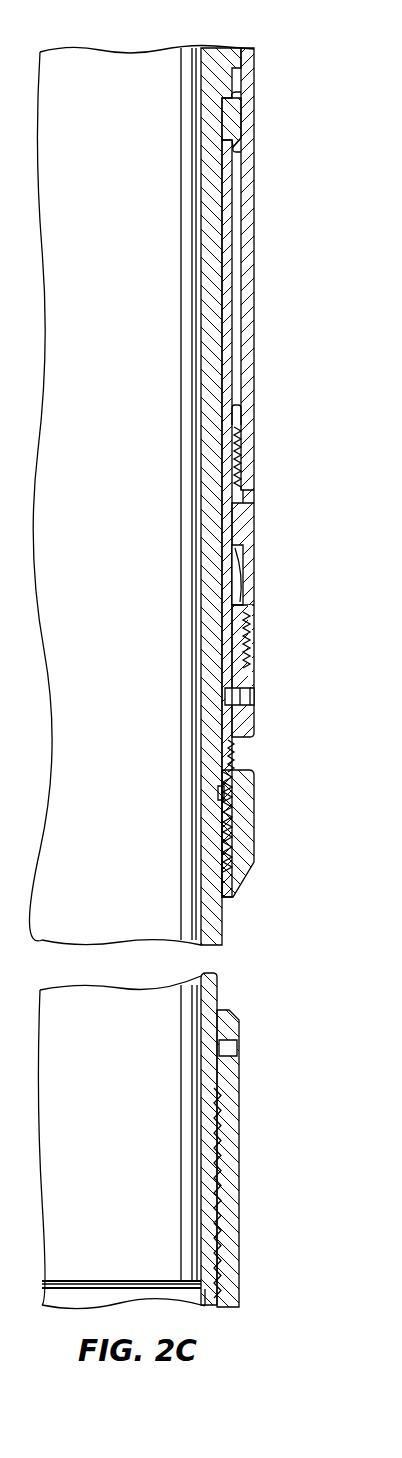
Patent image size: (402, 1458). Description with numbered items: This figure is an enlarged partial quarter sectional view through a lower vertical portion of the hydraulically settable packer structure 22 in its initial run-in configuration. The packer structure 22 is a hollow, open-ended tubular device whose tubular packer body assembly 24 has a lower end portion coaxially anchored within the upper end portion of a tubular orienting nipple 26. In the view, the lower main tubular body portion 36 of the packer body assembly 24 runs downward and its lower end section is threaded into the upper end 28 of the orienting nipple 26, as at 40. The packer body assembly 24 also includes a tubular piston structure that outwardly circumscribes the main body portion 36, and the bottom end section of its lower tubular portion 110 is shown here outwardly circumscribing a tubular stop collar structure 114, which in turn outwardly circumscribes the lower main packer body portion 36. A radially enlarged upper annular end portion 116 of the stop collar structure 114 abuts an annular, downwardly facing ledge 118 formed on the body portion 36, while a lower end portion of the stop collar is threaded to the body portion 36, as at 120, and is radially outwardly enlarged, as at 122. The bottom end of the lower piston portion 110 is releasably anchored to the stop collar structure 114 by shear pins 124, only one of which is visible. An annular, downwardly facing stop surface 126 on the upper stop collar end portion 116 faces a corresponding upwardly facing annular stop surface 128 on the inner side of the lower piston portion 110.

The hydraulically settable packer structure 22 is at (134, 46).
The lower main tubular body portion 36 is at (212, 90).
The radially enlarged upper annular end portion 116 is at (222, 127).
The downwardly facing ledge 118 is at (228, 108).
The downwardly facing stop surface 126 is at (235, 146).
The tubular packer body assembly 24 is at (217, 392).
The tubular stop collar structure 114 is at (224, 305).
The lower tubular piston portion 110 is at (257, 318).
The upwardly facing annular stop surface 128 is at (232, 425).
The shear pins 124 is at (255, 698).
The threaded connection of stop collar to body portion 120 is at (218, 830).
The radially outwardly enlarged lower end portion 122 is at (257, 832).
The upper end of orienting nipple 28 is at (228, 1010).
The tubular orienting nipple 26 is at (171, 1142).
The threaded connection of body portion to orienting nipple 40 is at (222, 1252).